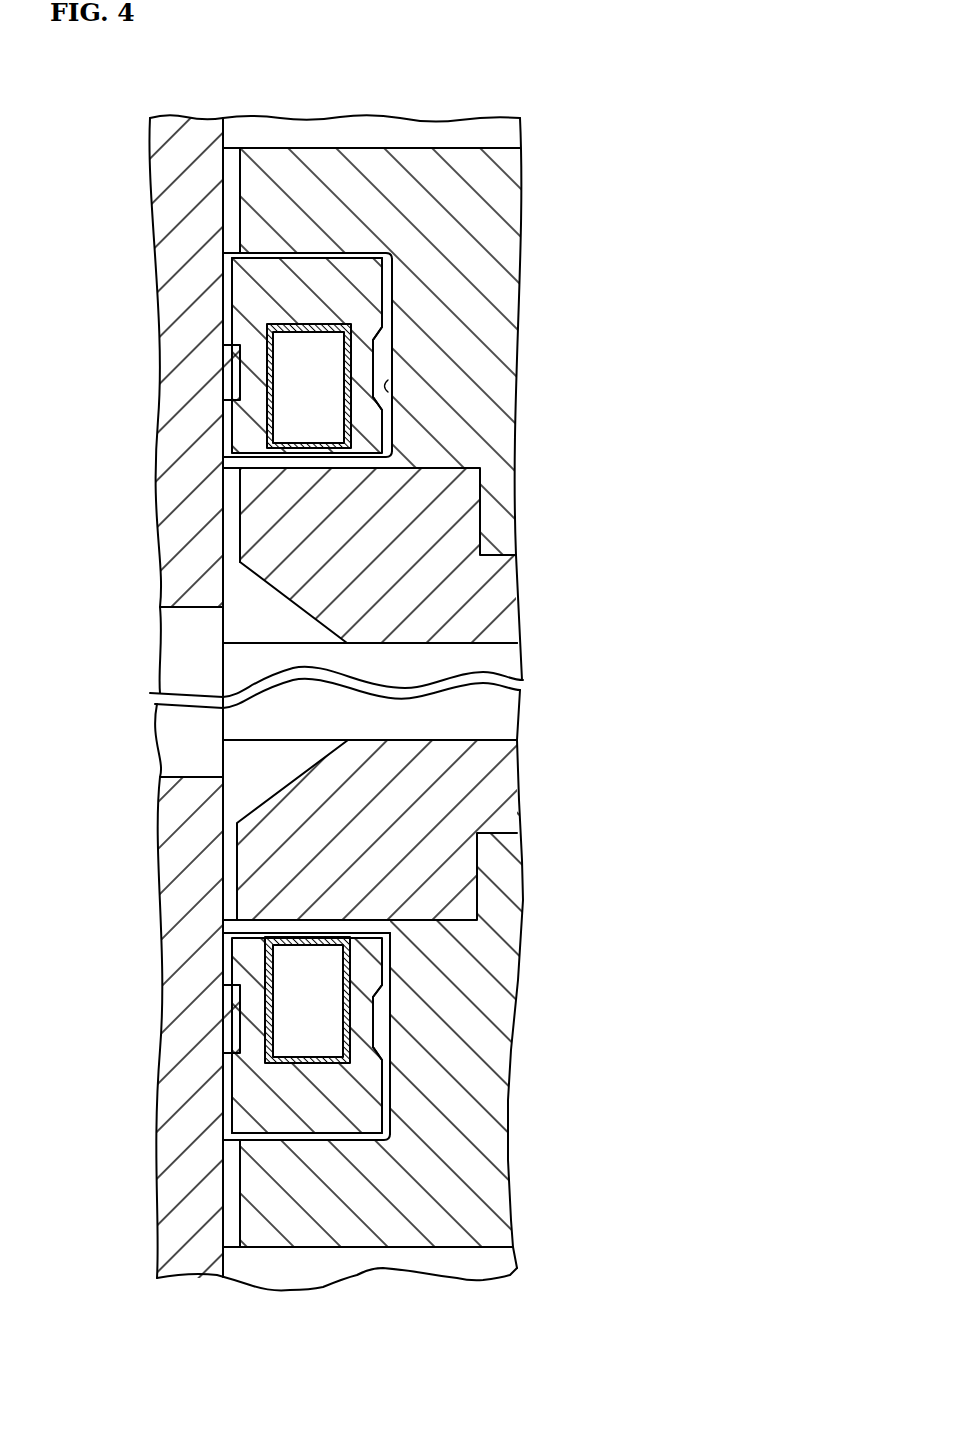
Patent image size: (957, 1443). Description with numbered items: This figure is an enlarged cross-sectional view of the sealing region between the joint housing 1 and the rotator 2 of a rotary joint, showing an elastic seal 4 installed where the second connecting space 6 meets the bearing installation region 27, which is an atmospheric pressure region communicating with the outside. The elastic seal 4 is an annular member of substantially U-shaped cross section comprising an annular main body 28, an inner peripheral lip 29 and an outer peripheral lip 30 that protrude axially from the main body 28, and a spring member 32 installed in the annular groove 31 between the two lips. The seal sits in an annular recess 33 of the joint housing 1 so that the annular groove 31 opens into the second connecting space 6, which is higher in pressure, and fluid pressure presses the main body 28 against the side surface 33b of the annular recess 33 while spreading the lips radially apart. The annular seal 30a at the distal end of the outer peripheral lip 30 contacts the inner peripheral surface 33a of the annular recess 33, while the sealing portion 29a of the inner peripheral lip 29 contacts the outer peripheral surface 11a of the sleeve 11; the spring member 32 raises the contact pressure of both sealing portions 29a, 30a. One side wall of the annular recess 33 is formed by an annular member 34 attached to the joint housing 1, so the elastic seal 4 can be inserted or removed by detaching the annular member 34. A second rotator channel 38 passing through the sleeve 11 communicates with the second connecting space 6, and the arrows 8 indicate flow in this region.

The joint housing 1 is at (478, 1250).
The rotator 2 is at (238, 1216).
The elastic seal 4 is at (395, 290).
The second connecting space 6 is at (483, 660).
The gap 8 is at (188, 637).
The sleeve 11 is at (160, 180).
The outer peripheral surface 11a is at (228, 372).
The bearing installation region 27 is at (497, 137).
The annular main body 28 is at (315, 283).
The inner peripheral lip 29 is at (240, 365).
The sealing portion 29a is at (232, 425).
The outer peripheral lip 30 is at (370, 372).
The annular seal 30a is at (370, 440).
The annular groove 31 is at (302, 357).
The spring member 32 is at (290, 347).
The annular recess 33 is at (388, 343).
The inner peripheral surface 33a is at (388, 390).
The side surface 33b is at (335, 258).
The annular member 34 is at (257, 525).
The second rotator channel 38 is at (193, 667).